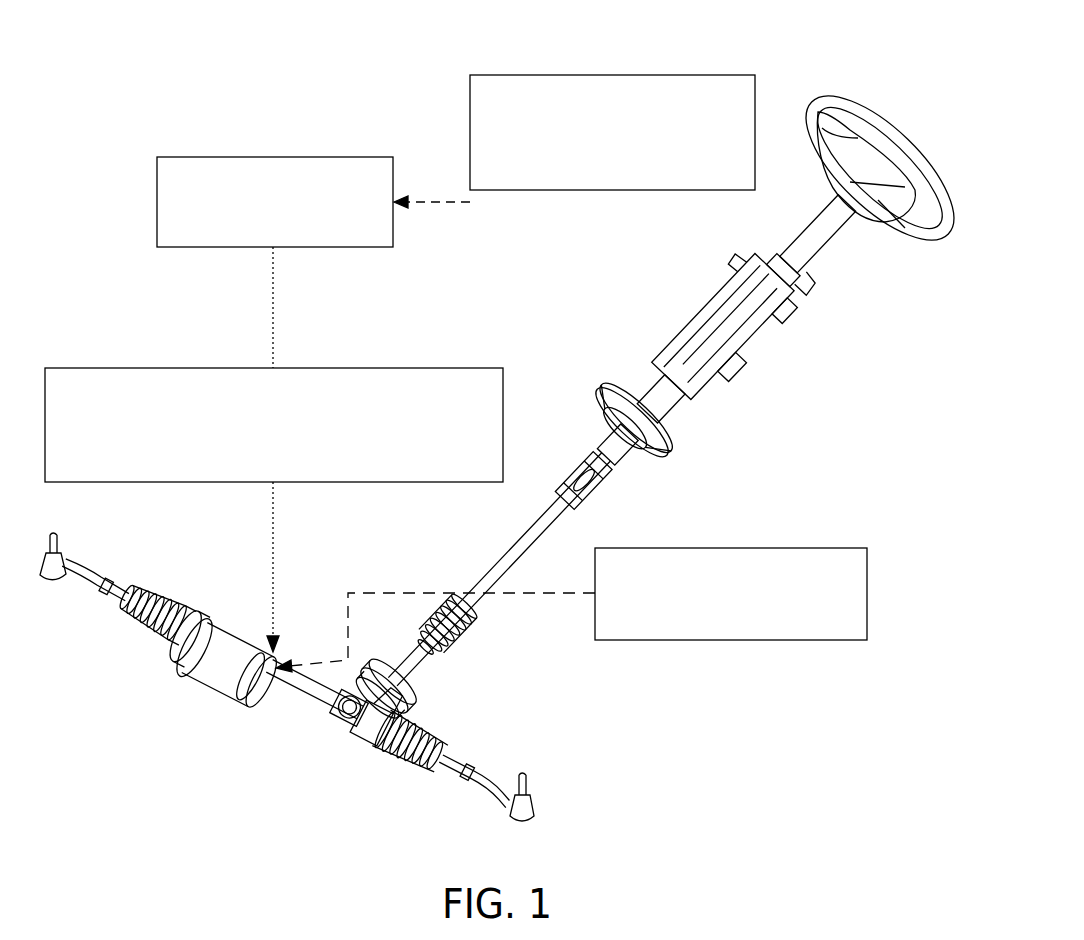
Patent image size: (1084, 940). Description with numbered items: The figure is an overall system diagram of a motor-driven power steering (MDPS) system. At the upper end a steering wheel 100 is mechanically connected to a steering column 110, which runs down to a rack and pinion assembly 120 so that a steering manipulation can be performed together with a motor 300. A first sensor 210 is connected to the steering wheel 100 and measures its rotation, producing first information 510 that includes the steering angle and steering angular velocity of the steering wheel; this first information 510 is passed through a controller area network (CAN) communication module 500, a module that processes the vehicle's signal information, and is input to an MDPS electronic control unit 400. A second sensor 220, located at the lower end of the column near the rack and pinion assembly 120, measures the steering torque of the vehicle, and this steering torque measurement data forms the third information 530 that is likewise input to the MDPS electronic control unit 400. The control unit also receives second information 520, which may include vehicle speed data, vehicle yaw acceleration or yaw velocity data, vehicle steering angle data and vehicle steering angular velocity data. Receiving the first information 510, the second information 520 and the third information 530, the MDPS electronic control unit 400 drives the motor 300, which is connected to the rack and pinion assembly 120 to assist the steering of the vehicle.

The steering wheel 100 is at (892, 147).
The steering column 110 is at (537, 520).
The rack and pinion assembly 120 is at (320, 703).
The first sensor 210 is at (913, 213).
The second sensor 220 is at (410, 697).
The motor 300 is at (170, 653).
The MDPS electronic control unit (ECU) 400 is at (232, 683).
The controller area network (CAN) communication module 500 is at (273, 157).
The first information 510 is at (612, 75).
The second information 520 is at (390, 368).
The third information 530 is at (797, 548).